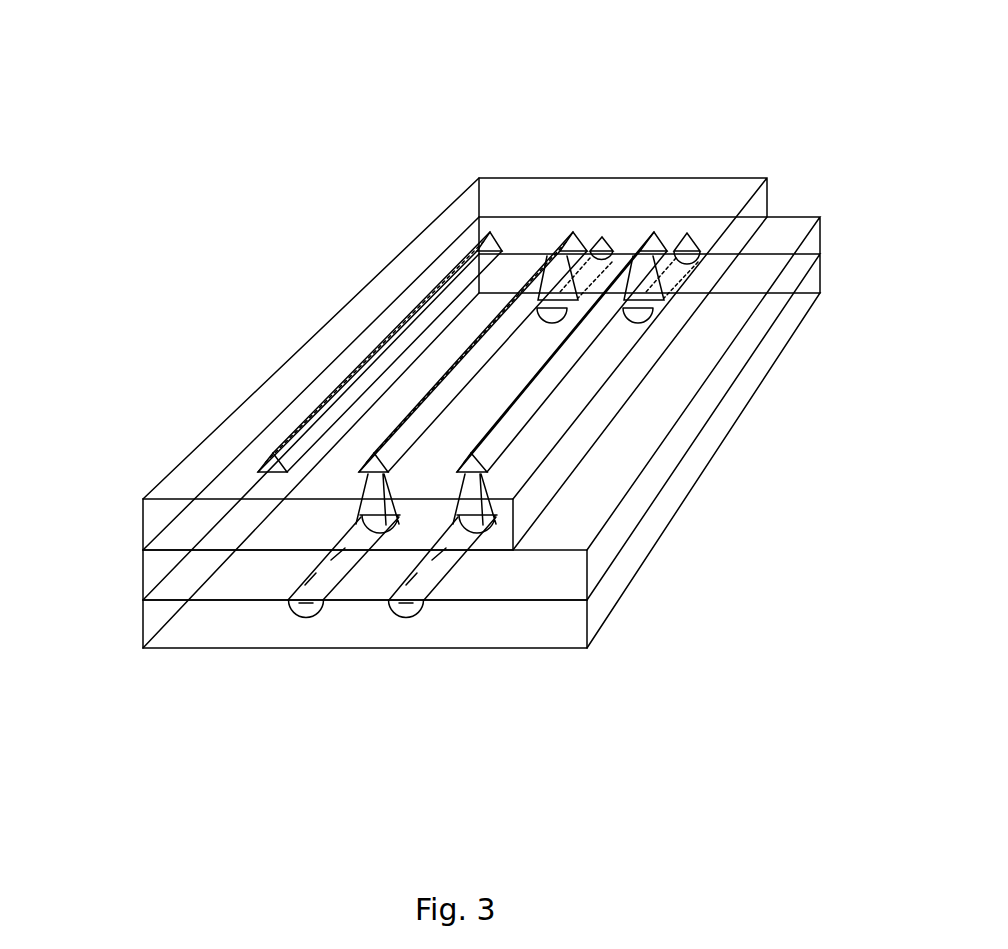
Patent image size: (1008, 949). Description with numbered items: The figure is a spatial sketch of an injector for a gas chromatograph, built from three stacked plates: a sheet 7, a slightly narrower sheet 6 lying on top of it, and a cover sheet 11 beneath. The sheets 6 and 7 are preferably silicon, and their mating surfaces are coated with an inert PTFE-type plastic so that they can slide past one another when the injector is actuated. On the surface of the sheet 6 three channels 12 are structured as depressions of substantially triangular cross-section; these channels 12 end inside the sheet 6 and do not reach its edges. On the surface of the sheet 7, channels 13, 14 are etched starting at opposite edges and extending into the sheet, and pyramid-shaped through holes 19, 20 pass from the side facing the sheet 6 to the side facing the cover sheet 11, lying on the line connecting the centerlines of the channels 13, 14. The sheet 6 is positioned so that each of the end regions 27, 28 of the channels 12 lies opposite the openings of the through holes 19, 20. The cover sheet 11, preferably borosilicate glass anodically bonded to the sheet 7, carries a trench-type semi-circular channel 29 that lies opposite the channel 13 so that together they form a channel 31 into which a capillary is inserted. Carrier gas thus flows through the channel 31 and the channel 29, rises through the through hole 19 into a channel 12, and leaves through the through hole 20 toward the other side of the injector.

The sheet 6 is at (155, 523).
The sheet 7 is at (600, 553).
The cover sheet 11 is at (602, 607).
The channels 12 is at (517, 410).
The end region 27 is at (477, 455).
The end region 28 is at (652, 248).
The channel 14 is at (683, 250).
The through hole 20 is at (547, 270).
The through hole 19 is at (455, 506).
The channel 13 is at (297, 603).
The channel 31 is at (303, 605).
The trench-type channel 29 is at (404, 604).